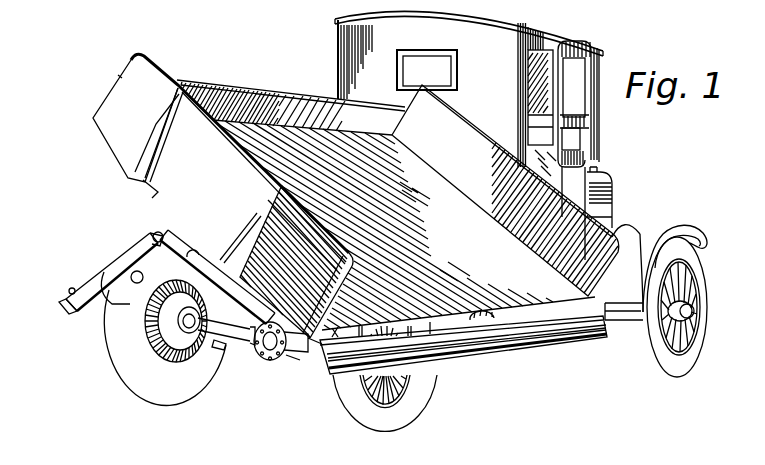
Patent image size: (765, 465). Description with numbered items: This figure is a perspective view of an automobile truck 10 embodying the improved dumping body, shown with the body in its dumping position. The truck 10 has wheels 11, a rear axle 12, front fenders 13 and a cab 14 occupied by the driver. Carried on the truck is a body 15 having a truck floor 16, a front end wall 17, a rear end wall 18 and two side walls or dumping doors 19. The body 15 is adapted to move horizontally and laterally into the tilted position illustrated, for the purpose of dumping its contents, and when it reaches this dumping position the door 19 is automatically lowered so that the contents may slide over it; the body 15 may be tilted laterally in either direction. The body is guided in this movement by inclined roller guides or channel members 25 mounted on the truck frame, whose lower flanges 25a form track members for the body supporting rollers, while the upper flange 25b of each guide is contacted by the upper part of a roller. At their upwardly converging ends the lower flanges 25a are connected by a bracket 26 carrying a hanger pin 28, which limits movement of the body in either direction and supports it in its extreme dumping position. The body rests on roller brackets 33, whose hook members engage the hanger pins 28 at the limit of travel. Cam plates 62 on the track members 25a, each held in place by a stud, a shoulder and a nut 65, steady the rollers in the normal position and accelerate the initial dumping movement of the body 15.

The automobile truck 10 is at (606, 163).
The wheels 11 is at (702, 272).
The rear axle 12 is at (250, 338).
The front fenders 13 is at (676, 225).
The cab 14 is at (523, 22).
The body 15 is at (278, 147).
The truck floor 16 is at (405, 229).
The front end wall 17 is at (500, 188).
The rear end wall 18 is at (222, 216).
The side walls or dumping doors 19 is at (220, 95).
The inclined roller guides or channel members 25 is at (107, 278).
The lower flanges 25a is at (110, 326).
The upper flange 25b is at (72, 288).
The bracket 26 is at (150, 235).
The hanger pin 28 is at (156, 232).
The roller bracket 33 is at (157, 192).
The cam plates 62 is at (137, 283).
The nut 65 is at (60, 305).